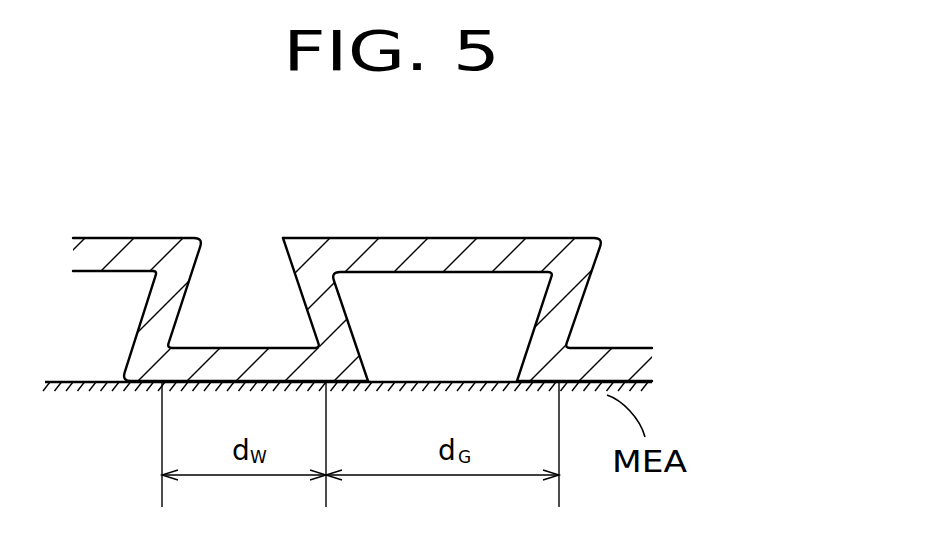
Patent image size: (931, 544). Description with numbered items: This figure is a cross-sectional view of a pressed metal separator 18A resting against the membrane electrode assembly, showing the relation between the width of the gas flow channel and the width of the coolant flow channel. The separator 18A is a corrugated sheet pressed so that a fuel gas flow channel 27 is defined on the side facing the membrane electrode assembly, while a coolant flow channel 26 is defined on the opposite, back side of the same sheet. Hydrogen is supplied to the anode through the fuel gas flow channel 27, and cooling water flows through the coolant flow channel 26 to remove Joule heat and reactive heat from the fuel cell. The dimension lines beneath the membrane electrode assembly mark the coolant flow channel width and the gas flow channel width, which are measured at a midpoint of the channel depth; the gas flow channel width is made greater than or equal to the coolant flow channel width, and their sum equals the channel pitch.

The metal separator 18A is at (560, 322).
The coolant flow channel 26 is at (257, 312).
The fuel gas flow channel 27 is at (427, 298).